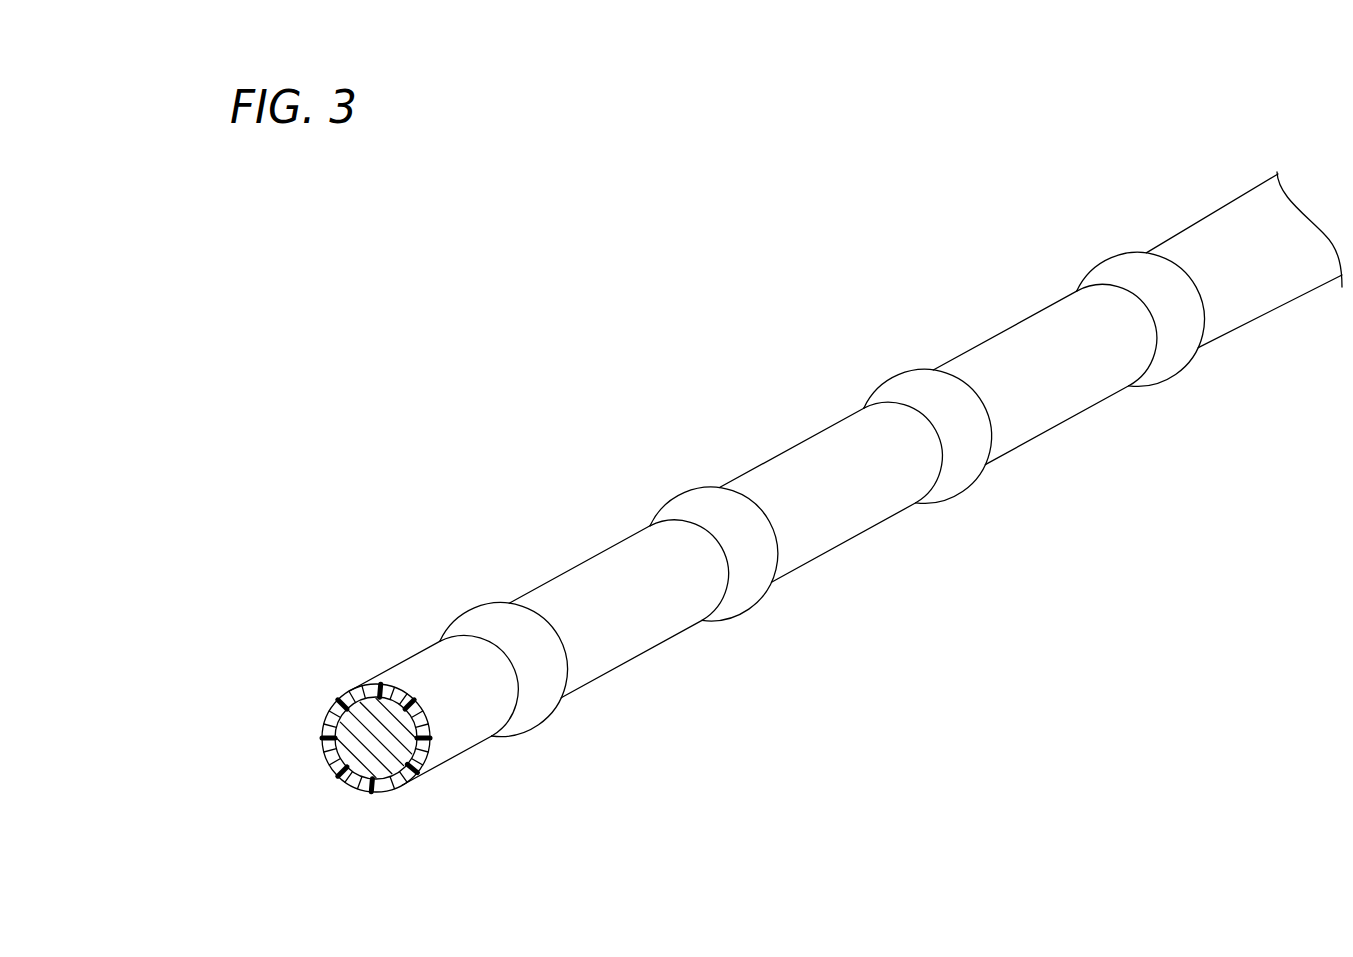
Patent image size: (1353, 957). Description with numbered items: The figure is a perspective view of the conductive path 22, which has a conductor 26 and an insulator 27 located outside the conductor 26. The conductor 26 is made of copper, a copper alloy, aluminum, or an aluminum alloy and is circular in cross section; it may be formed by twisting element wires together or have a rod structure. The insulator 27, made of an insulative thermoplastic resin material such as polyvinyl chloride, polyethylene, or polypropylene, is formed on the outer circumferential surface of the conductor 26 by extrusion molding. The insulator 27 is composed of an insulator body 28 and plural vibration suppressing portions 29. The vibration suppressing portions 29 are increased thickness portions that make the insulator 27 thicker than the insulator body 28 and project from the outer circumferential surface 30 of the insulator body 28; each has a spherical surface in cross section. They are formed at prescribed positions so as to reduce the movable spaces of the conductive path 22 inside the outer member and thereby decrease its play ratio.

The conductive path 22 is at (671, 398).
The conductor 26 is at (348, 723).
The insulator 27 is at (342, 698).
The insulator body 28 is at (1225, 243).
The vibration suppressing portion 29 is at (917, 393).
The outer circumferential surface 30 is at (453, 735).